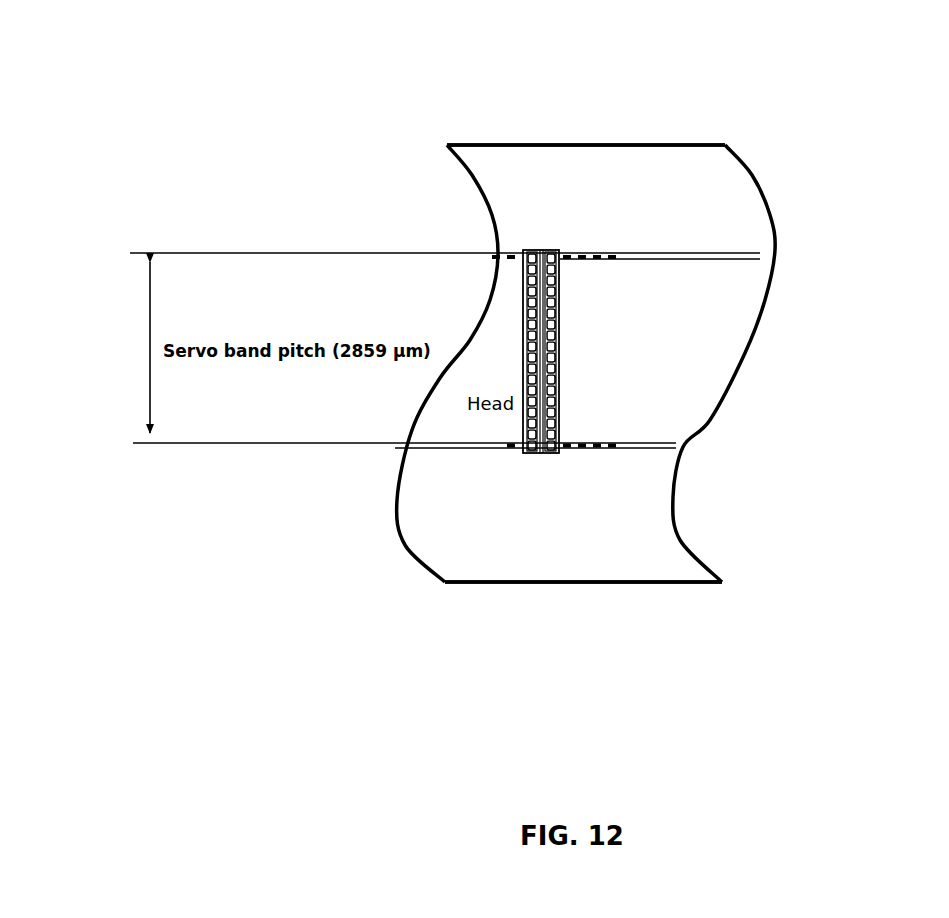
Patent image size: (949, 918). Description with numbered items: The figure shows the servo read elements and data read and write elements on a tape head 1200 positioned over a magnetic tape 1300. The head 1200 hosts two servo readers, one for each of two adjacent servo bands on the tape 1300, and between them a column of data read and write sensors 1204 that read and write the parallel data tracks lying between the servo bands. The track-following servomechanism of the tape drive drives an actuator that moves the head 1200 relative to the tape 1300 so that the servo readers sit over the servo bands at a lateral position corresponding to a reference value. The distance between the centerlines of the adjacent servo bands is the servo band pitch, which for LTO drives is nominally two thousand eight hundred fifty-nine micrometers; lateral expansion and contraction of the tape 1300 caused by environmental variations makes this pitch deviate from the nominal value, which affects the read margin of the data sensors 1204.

The head 1200 is at (782, 124).
The tape 1300 is at (487, 145).
The data read and write sensors 1204 is at (562, 341).